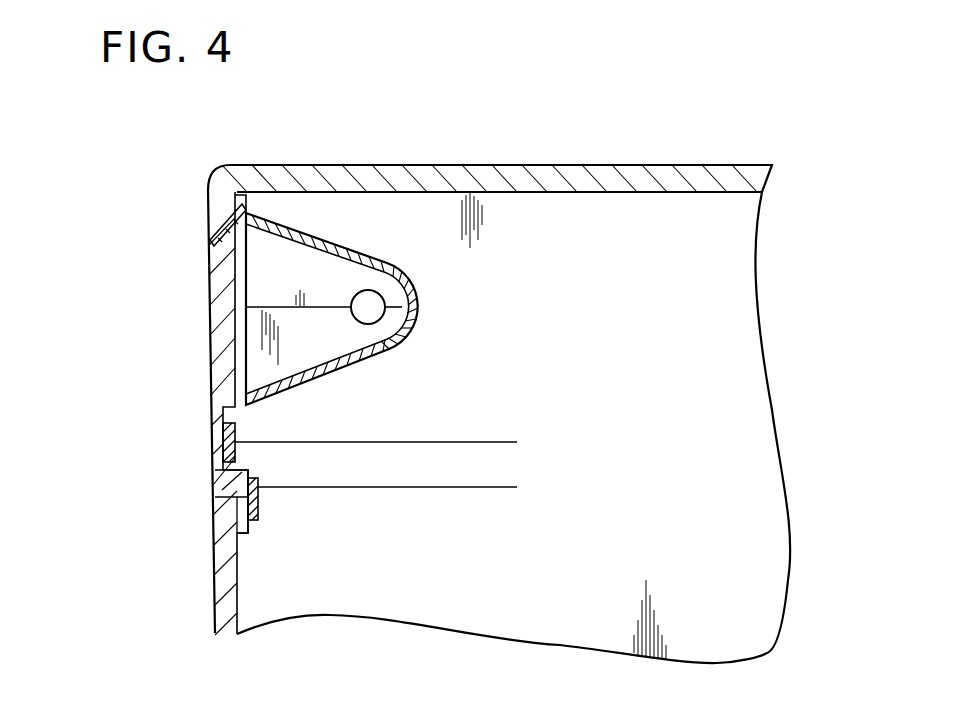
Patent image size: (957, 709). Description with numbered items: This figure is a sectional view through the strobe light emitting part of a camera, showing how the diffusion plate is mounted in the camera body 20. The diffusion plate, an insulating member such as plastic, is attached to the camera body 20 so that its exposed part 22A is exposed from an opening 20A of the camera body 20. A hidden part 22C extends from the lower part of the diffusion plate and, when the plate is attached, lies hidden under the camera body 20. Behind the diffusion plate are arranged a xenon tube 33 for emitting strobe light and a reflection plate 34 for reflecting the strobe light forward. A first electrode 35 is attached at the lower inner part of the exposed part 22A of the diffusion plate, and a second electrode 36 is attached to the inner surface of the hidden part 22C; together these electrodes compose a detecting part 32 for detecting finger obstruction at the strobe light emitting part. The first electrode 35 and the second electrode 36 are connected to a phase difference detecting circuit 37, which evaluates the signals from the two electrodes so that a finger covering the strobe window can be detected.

The camera body 20 is at (333, 178).
The opening 20A is at (207, 223).
The exposed part 22A is at (210, 280).
The detecting part 32 is at (186, 436).
The xenon tube 33 is at (362, 303).
The reflection plate 34 is at (373, 357).
The first electrode 35 is at (222, 440).
The second electrode 36 is at (258, 497).
The hidden part 22C is at (255, 525).
The phase difference detecting circuit 37 is at (627, 397).